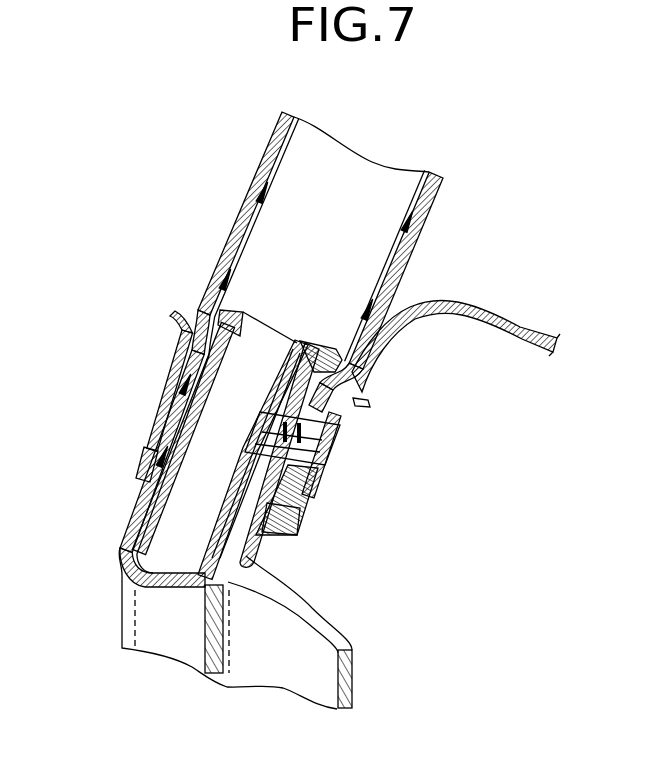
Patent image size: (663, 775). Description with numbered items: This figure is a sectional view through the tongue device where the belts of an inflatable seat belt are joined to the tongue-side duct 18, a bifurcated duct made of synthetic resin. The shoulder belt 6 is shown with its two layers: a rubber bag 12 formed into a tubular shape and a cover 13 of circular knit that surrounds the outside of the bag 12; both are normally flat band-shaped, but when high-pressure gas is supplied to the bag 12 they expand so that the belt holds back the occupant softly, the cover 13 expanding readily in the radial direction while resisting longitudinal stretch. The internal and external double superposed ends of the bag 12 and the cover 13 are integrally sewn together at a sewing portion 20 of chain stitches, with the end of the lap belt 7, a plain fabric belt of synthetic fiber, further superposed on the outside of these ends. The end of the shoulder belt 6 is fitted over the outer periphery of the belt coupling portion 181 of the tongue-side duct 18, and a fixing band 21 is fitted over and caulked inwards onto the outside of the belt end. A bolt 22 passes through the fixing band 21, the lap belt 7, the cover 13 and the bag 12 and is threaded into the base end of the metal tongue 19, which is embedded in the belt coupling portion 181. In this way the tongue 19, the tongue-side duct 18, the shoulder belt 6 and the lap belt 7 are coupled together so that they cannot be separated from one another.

The shoulder belt 6 is at (226, 198).
The lap belt 7 is at (497, 317).
The bag 12 is at (242, 253).
The cover 13 is at (210, 273).
The tongue-side duct 18 is at (336, 605).
The belt coupling portion 181 is at (308, 340).
The tongue 19 is at (207, 628).
The sewing portion 20 is at (142, 452).
The fixing band 21 is at (172, 380).
The bolt 22 is at (333, 434).